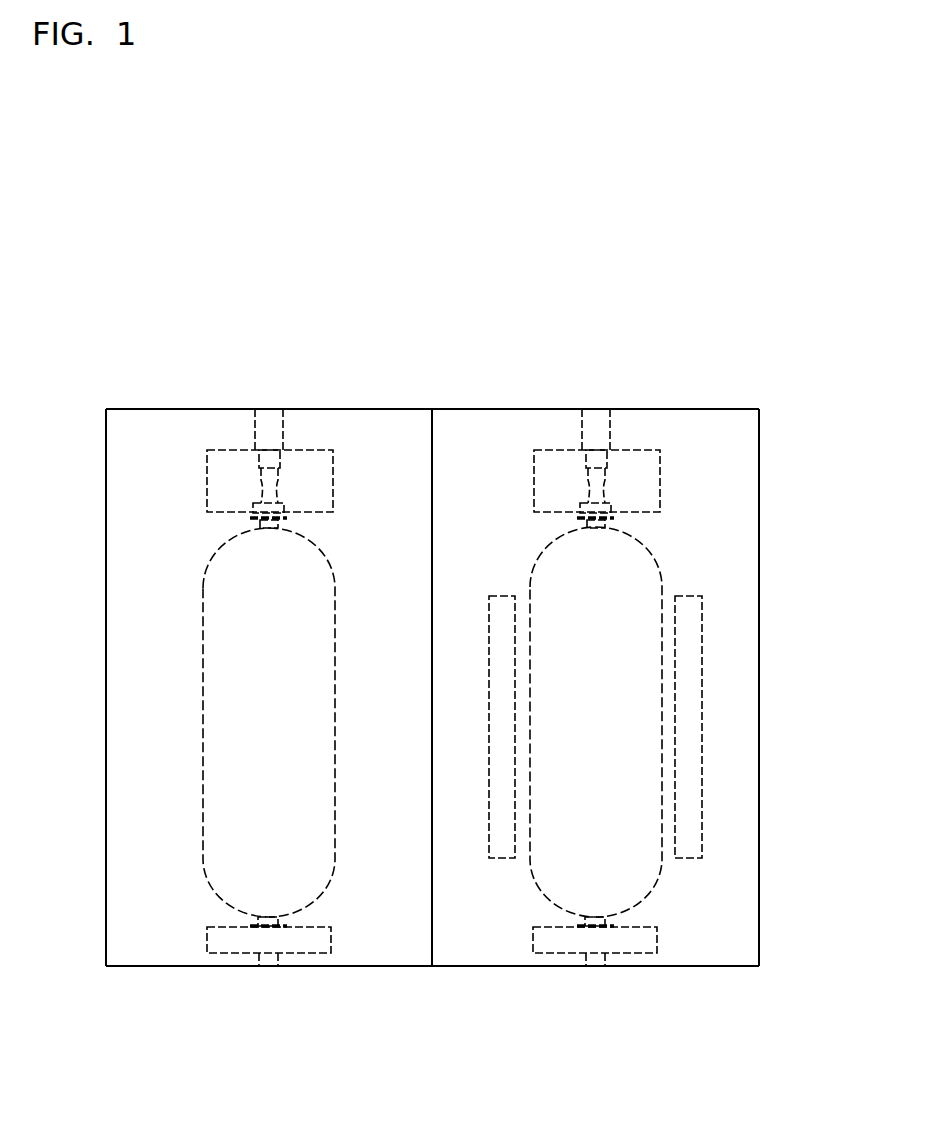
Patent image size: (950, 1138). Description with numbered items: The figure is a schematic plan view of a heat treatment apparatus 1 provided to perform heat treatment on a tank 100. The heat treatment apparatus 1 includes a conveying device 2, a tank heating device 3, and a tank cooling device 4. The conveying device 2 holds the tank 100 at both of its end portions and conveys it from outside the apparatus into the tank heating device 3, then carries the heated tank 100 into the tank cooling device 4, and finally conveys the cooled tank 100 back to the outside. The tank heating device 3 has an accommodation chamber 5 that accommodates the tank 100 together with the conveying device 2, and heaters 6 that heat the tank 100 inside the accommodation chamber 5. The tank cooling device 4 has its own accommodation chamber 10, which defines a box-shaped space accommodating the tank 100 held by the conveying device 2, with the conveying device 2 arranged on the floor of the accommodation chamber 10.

The heat treatment apparatus 1 is at (705, 338).
The conveying device 2 is at (307, 450).
The tank heating device 3 is at (469, 408).
The tank cooling device 4 is at (387, 408).
The accommodation chamber 5 is at (760, 473).
The heaters 6 is at (517, 650).
The accommodation chamber 10 is at (106, 462).
The tank 100 is at (328, 563).